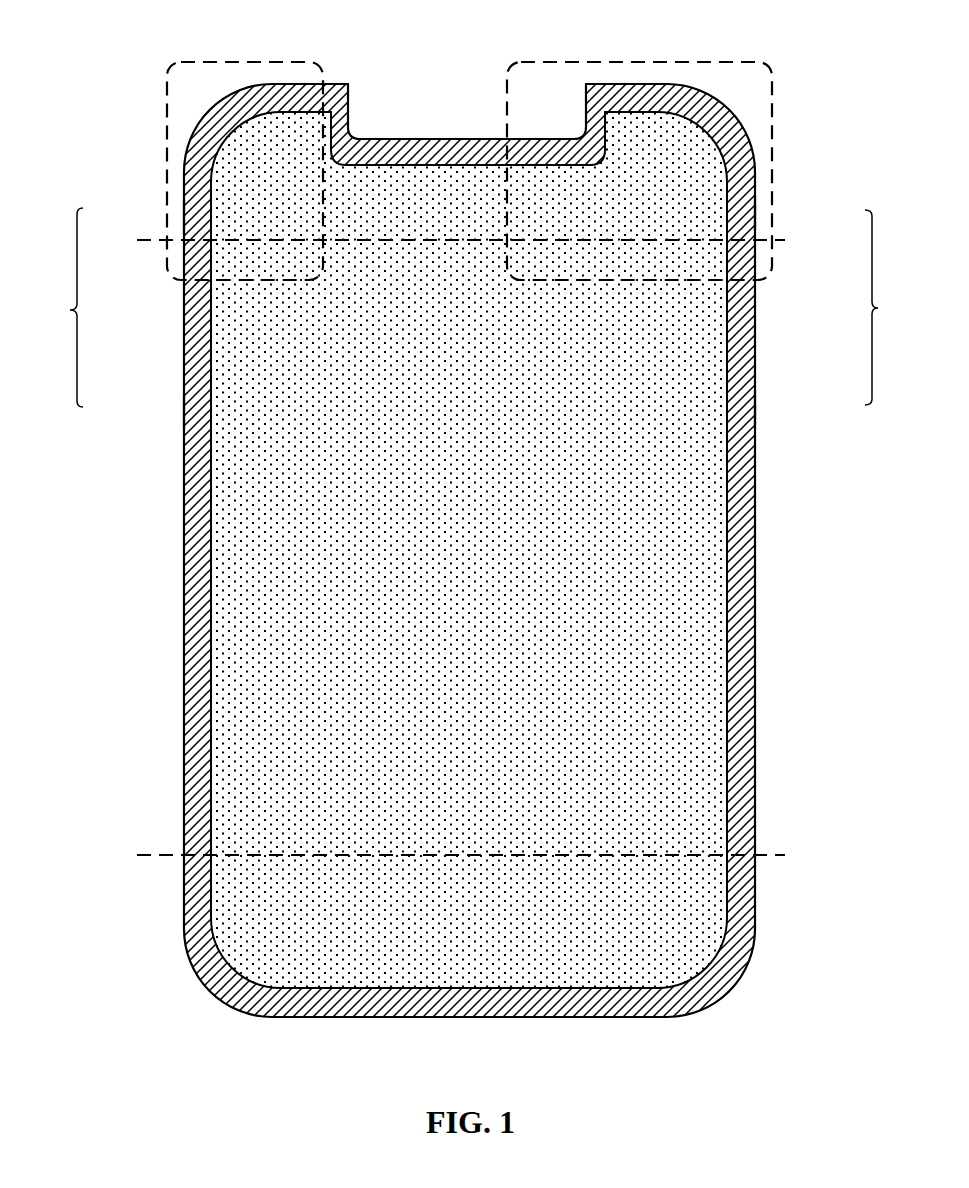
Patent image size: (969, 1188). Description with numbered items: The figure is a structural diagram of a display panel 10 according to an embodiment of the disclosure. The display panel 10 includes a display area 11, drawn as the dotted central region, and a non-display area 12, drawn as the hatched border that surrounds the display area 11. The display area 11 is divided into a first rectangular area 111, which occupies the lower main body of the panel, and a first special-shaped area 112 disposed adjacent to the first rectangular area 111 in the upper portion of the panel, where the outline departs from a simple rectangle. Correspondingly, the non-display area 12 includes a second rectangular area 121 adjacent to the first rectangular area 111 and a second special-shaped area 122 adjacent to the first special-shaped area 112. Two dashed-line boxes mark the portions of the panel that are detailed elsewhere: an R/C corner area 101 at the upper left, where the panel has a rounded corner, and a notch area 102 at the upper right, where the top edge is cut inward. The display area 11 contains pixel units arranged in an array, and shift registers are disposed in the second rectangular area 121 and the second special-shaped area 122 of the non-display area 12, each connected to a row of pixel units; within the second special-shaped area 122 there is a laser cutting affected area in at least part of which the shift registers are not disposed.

The display panel 10 is at (476, 55).
The R/C corner area 101 is at (167, 133).
The notch area 102 is at (772, 113).
The display area 11 is at (521, 532).
The first rectangular area 111 is at (729, 398).
The first special-shaped area 112 is at (729, 205).
The non-display area 12 is at (414, 307).
The second rectangular area 121 is at (185, 412).
The second special-shaped area 122 is at (185, 218).